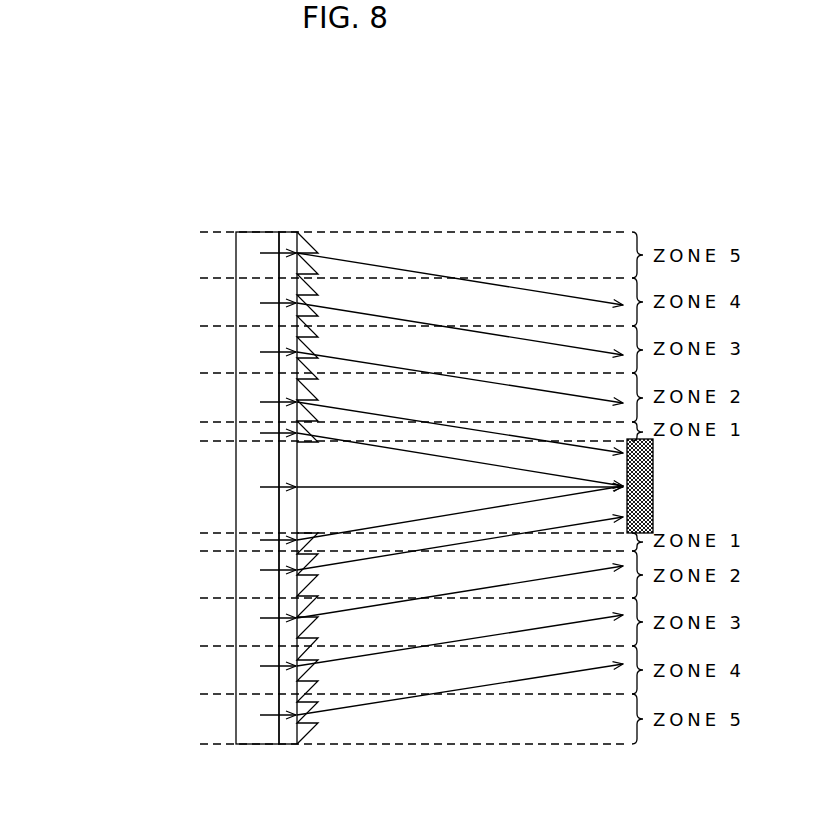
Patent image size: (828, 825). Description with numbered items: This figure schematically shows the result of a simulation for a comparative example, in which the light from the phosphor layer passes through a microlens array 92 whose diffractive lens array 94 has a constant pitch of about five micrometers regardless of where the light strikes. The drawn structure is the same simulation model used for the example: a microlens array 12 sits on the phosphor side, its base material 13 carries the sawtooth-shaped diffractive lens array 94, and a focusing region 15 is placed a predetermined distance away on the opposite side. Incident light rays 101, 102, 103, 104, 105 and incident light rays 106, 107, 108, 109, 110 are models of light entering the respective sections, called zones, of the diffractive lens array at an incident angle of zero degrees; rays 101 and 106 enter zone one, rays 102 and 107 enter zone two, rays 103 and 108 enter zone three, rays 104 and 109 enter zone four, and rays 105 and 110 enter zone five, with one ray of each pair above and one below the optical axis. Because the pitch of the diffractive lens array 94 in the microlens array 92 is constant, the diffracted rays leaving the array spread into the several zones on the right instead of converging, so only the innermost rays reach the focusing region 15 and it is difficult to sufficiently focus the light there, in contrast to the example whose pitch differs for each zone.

The microlens array 12 is at (255, 237).
The microlens array 92 is at (363, 167).
The base material 13 is at (287, 238).
The diffractive lens array 94 is at (298, 232).
The focusing region 15 is at (653, 487).
The incident light ray 101 is at (273, 432).
The incident light ray 102 is at (273, 402).
The incident light ray 103 is at (273, 352).
The incident light ray 104 is at (273, 305).
The incident light ray 105 is at (272, 254).
The incident light ray 106 is at (268, 538).
The incident light ray 107 is at (268, 570).
The incident light ray 108 is at (268, 618).
The incident light ray 109 is at (268, 666).
The incident light ray 110 is at (268, 717).